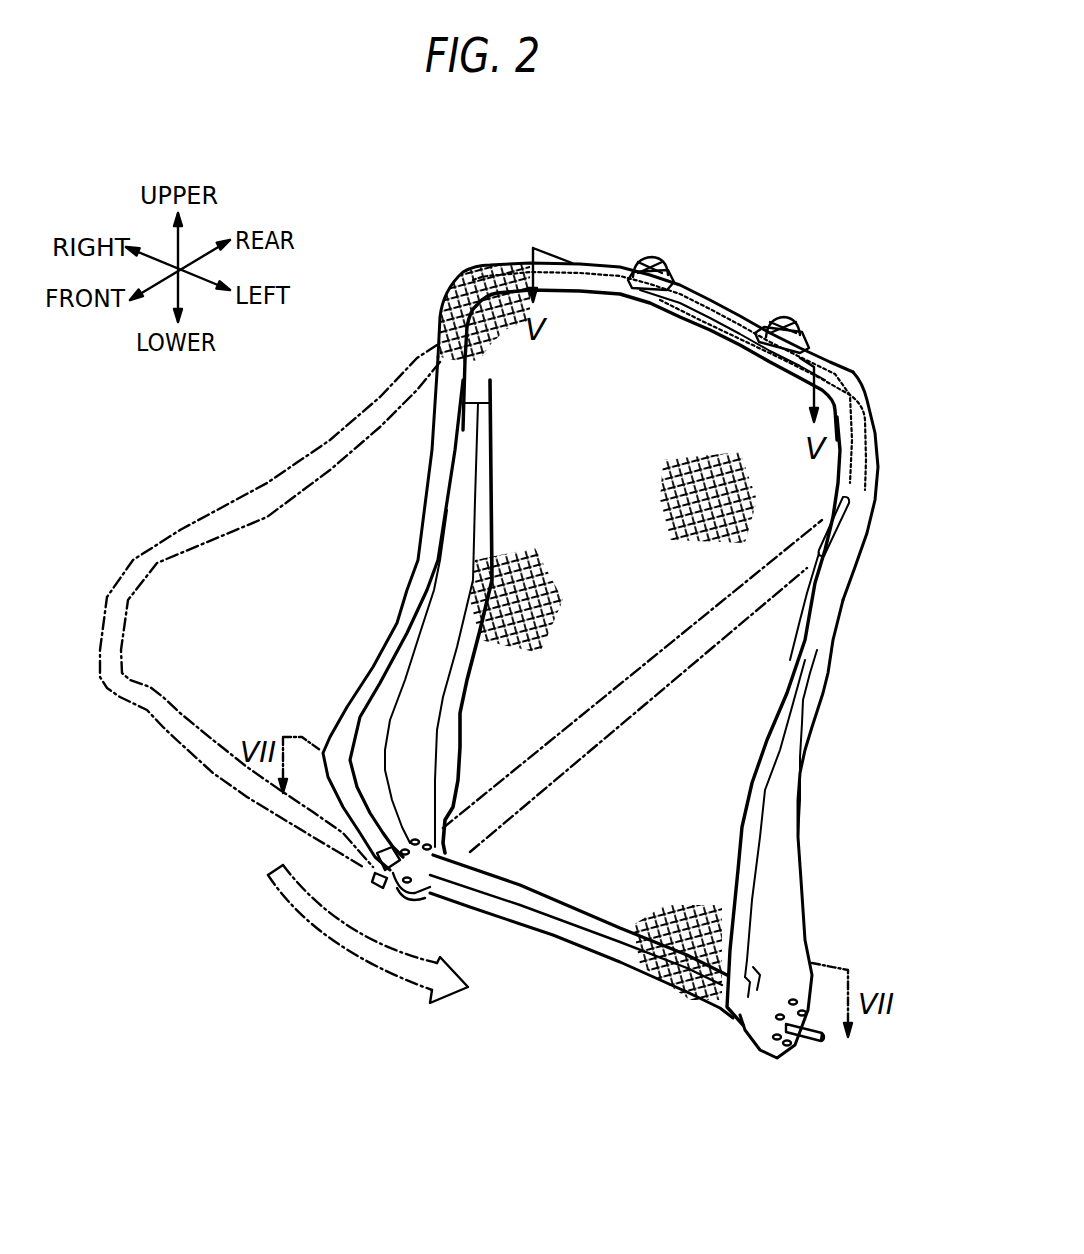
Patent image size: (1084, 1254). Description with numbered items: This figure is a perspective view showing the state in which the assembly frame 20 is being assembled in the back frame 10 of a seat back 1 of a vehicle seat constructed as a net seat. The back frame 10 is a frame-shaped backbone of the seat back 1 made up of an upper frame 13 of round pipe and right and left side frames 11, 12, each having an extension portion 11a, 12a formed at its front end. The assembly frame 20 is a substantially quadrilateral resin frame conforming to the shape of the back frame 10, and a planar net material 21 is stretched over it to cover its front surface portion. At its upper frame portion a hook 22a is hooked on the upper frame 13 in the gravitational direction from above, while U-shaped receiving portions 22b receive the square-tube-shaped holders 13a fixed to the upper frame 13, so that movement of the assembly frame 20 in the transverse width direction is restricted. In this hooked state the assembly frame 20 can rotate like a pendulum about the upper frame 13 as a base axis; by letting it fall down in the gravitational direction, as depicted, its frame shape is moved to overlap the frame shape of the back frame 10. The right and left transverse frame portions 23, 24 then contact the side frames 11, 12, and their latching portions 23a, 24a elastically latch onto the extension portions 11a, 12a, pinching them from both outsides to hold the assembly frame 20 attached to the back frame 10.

The seat back 1 is at (423, 242).
The back frame 10 is at (852, 376).
The right side frame 11 is at (790, 860).
The extension portion 11a is at (753, 915).
The left side frame 12 is at (423, 747).
The extension portion 12a is at (372, 688).
The upper frame 13 is at (692, 327).
The holder 13a is at (652, 255).
The assembly frame 20 is at (462, 273).
The net material 21 is at (680, 540).
The hook 22a is at (703, 293).
The U-shaped receiving portion 22b is at (648, 254).
The right transverse frame portion 23 is at (763, 840).
The latching portion 23a is at (753, 915).
The left transverse frame portion 24 is at (398, 623).
The latching portion 24a is at (372, 688).